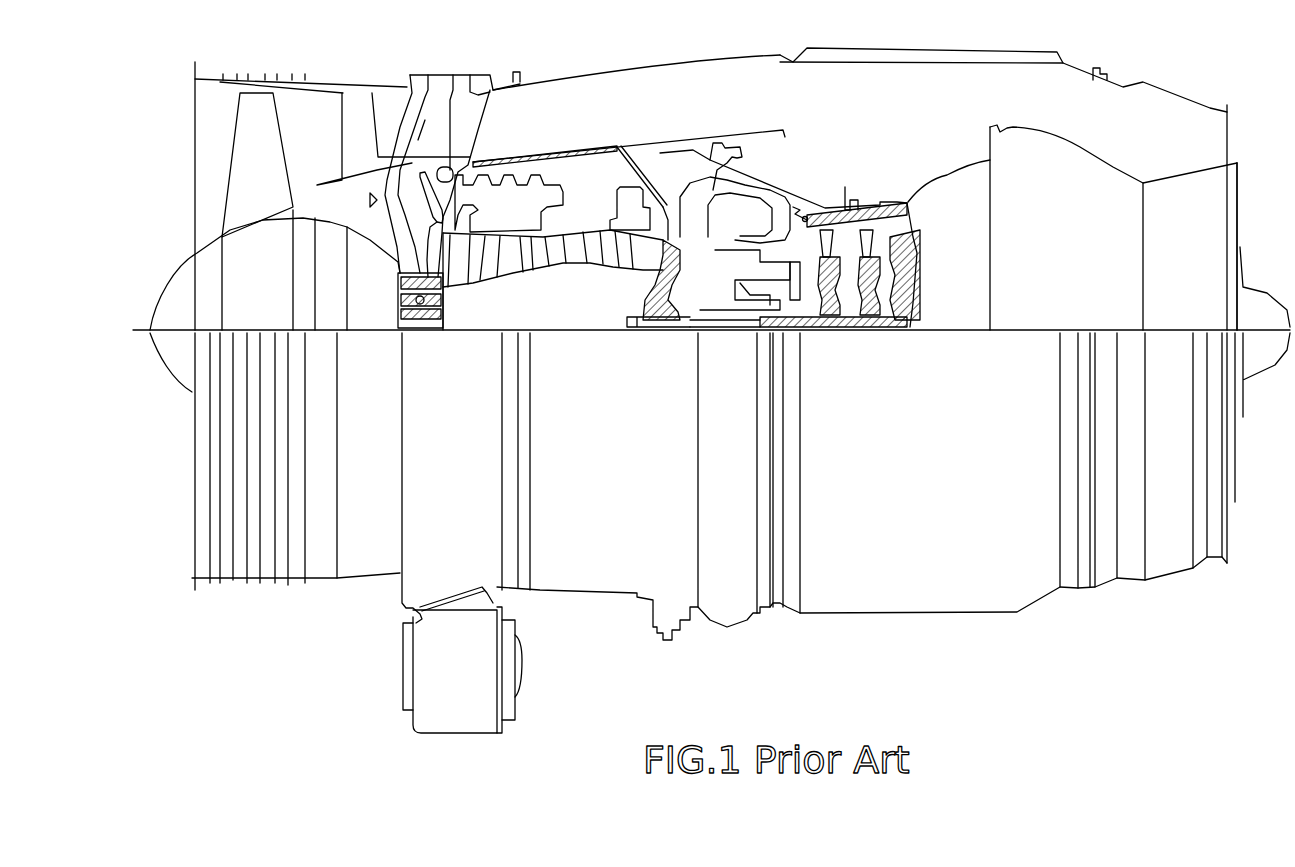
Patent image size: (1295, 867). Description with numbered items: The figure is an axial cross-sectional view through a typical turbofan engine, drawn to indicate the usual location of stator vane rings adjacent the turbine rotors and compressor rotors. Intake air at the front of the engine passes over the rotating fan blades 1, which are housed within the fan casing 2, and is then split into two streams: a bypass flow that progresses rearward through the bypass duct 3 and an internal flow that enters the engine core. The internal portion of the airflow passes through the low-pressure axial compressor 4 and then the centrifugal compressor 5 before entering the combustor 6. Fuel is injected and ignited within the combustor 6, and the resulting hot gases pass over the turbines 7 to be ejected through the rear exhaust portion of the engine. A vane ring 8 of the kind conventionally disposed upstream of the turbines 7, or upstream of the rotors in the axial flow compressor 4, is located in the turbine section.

The fan blades 1 is at (227, 187).
The fan casing 2 is at (263, 80).
The bypass duct 3 is at (610, 92).
The low-pressure axial compressor 4 is at (495, 287).
The centrifugal compressor 5 is at (660, 290).
The combustor 6 is at (720, 213).
The turbines 7 is at (822, 300).
The vane ring 8 is at (840, 227).